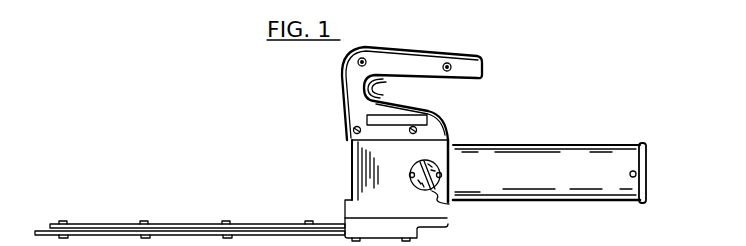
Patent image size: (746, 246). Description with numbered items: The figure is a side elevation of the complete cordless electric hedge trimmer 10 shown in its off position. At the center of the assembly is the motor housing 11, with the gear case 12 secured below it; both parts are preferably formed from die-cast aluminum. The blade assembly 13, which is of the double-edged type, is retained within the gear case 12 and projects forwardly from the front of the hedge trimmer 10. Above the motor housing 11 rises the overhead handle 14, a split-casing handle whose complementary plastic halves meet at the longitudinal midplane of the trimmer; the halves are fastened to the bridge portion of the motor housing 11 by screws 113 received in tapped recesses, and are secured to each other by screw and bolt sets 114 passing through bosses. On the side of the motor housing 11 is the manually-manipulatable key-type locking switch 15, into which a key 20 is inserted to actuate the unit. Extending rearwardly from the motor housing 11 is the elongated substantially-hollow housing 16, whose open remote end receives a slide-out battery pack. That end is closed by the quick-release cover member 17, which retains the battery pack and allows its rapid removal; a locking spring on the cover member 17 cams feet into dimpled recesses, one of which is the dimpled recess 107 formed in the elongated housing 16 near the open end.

The cordless electric hedge trimmer 10 is at (256, 113).
The motor housing 11 is at (351, 171).
The gear case 12 is at (362, 219).
The blade assembly 13 is at (204, 216).
The overhead handle 14 is at (484, 77).
The key-type locking switch 15 is at (443, 161).
The elongated substantially-hollow housing 16 is at (555, 168).
The quick-release cover member 17 is at (647, 172).
The key 20 is at (450, 207).
The dimpled recess 107 is at (643, 189).
The screws 113 is at (415, 127).
The screw and bolt sets 114 is at (357, 64).